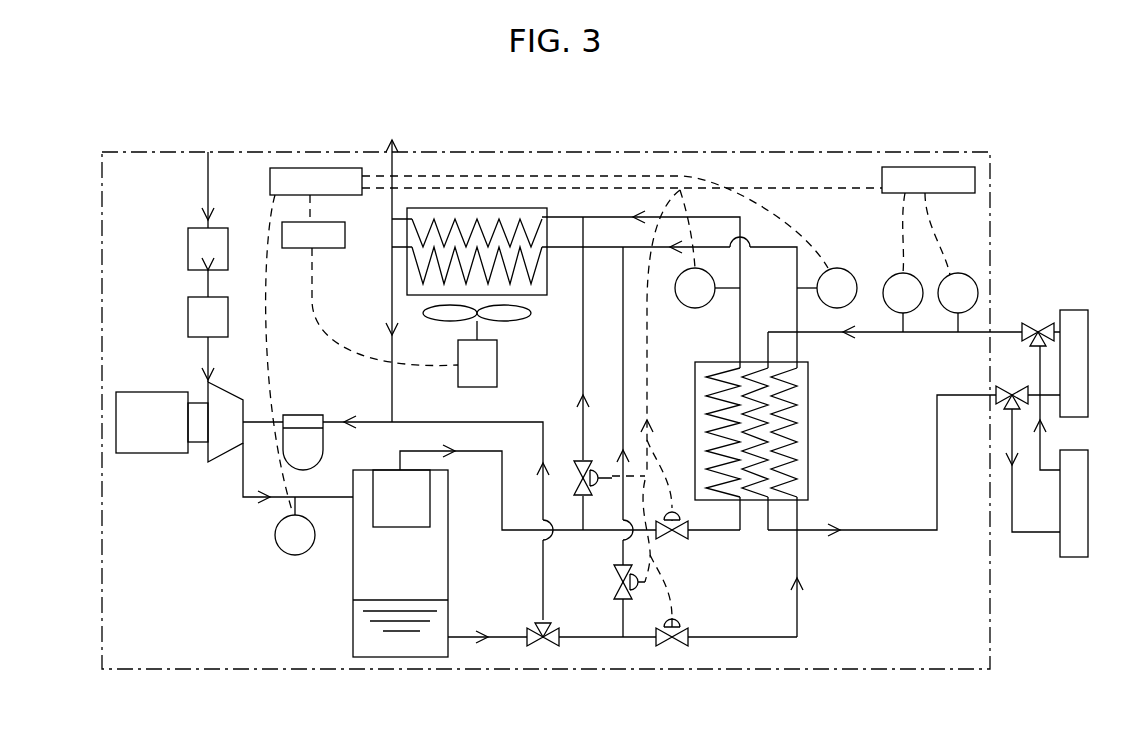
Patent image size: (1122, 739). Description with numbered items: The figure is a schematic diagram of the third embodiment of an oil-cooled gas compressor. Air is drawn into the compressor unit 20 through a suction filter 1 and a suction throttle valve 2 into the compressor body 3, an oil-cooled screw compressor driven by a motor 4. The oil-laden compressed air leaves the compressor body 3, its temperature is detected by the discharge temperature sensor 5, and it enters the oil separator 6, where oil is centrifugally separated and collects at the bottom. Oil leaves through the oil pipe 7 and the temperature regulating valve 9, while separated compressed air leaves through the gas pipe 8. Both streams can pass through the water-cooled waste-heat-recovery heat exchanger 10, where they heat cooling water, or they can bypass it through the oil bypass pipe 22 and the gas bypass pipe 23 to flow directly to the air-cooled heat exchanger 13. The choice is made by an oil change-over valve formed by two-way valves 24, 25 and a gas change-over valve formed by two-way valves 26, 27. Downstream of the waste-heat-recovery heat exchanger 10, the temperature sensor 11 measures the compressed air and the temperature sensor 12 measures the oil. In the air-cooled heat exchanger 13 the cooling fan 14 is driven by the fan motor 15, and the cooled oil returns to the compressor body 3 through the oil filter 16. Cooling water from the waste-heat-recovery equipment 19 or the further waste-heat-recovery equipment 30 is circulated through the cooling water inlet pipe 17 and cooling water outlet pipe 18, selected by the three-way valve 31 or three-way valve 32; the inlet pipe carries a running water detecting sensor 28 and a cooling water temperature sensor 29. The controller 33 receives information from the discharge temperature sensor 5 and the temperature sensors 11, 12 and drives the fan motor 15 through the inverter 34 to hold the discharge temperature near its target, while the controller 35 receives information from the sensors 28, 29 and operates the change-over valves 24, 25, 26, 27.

The suction filter 1 is at (188, 258).
The suction throttle valve 2 is at (188, 328).
The compressor body 3 is at (218, 402).
The motor 4 is at (128, 412).
The discharge temperature sensor 5 is at (295, 555).
The oil separator 6 is at (400, 660).
The oil pipe 7 is at (467, 640).
The gas pipe 8 is at (478, 453).
The temperature regulating valve 9 is at (548, 642).
The waste-heat-recovery heat exchanger 10 is at (808, 432).
The temperature sensor 11 is at (700, 308).
The temperature sensor 12 is at (840, 268).
The air-cooled heat exchanger 13 is at (510, 208).
The cooling fan 14 is at (510, 321).
The fan motor 15 is at (497, 372).
The oil filter 16 is at (300, 415).
The cooling water inlet pipe 17 is at (883, 338).
The cooling water outlet pipe 18 is at (893, 533).
The waste-heat-recovery equipment 19 is at (1068, 310).
The compressor unit 20 is at (152, 152).
The oil bypass pipe 22 is at (623, 400).
The gas bypass pipe 23 is at (585, 335).
The two-way valve 24 is at (632, 598).
The two-way valve 25 is at (680, 648).
The two-way valve 26 is at (598, 490).
The two-way valve 27 is at (682, 538).
The running water detecting sensor 28 is at (890, 275).
The temperature sensor 29 is at (968, 276).
The waste-heat-recovery equipment 30 is at (1070, 558).
The three-way valve 31 is at (1036, 322).
The three-way valve 32 is at (1012, 385).
The controller 33 is at (292, 168).
The inverter 34 is at (335, 248).
The controller 35 is at (935, 167).